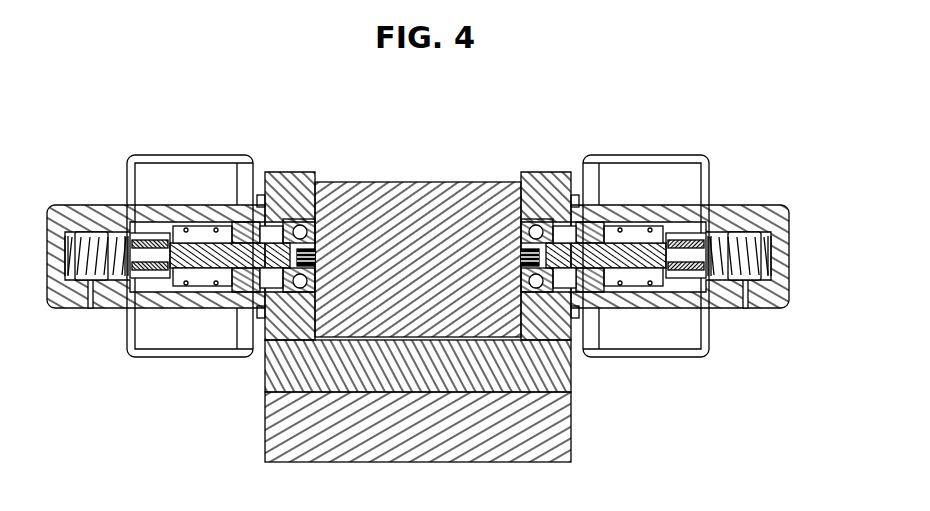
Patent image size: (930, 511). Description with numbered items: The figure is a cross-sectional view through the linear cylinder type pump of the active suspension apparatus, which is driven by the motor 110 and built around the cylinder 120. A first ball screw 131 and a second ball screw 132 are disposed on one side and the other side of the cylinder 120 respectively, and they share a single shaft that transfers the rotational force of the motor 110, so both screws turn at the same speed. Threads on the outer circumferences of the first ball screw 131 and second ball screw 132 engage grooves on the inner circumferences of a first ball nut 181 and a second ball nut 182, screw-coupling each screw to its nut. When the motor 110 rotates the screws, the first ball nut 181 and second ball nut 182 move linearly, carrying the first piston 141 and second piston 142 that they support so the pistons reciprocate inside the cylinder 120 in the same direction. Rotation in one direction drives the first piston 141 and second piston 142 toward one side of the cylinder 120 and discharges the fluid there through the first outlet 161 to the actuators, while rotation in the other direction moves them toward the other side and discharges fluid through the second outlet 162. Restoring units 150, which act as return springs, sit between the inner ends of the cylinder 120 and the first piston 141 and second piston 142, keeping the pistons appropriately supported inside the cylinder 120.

The motor 110 is at (418, 210).
The cylinder 120 is at (77, 210).
The first ball screw 131 is at (237, 233).
The second ball screw 132 is at (625, 240).
The first piston 141 is at (173, 228).
The second piston 142 is at (648, 237).
The restoring unit 150 is at (78, 285).
The first outlet 161 is at (93, 308).
The second outlet 162 is at (760, 305).
The first ball nut 181 is at (268, 238).
The second ball nut 182 is at (572, 237).